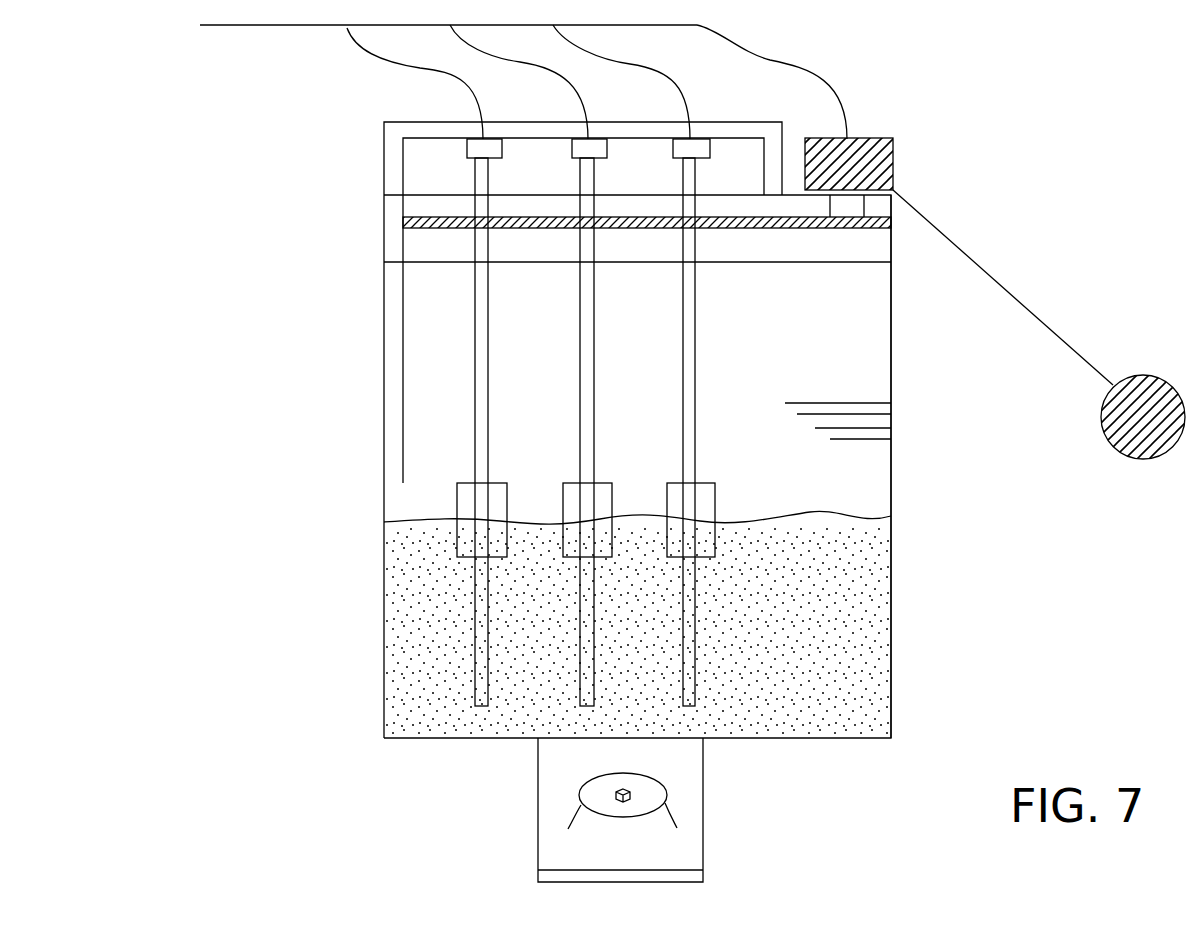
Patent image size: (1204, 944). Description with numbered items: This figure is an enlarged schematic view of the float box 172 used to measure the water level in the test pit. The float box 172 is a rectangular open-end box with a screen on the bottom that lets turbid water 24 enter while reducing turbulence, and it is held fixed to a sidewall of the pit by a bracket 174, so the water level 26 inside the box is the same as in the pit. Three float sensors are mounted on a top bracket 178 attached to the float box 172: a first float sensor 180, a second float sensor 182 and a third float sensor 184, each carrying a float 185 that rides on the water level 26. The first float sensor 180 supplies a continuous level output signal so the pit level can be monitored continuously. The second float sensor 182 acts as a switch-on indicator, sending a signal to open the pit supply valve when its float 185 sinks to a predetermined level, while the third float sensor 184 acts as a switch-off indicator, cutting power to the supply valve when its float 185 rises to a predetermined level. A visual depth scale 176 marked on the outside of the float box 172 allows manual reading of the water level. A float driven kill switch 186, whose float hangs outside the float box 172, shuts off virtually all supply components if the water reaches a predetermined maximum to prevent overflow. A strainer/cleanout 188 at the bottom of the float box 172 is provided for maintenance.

The turbid water 24 is at (815, 633).
The water level in the test pit 26 is at (413, 522).
The float box 172 is at (892, 510).
The bracket 174 is at (390, 343).
The visual depth scale 176 is at (873, 403).
The top bracket 178 is at (440, 228).
The first float sensor 180 is at (488, 408).
The second float sensor 182 is at (594, 388).
The third float sensor 184 is at (695, 293).
The float 185 is at (467, 492).
The float driven kill switch 186 is at (893, 172).
The strainer/cleanout 188 is at (555, 805).